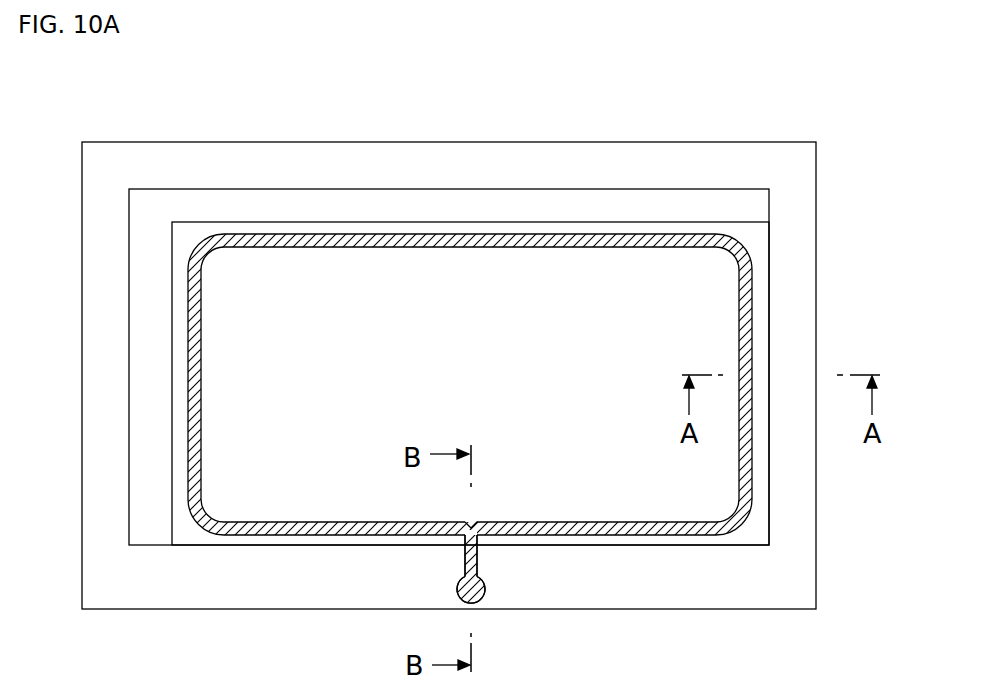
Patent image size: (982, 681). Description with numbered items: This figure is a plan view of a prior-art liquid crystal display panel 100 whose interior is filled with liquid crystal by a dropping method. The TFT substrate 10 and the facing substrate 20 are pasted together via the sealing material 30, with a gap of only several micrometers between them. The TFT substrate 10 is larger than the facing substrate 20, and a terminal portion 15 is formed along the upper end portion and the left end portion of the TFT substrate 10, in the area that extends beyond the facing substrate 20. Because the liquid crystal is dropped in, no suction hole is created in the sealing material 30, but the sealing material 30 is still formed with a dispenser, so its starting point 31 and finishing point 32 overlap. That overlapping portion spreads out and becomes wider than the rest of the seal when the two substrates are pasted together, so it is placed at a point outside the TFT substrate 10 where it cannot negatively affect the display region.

The display device 100 is at (232, 142).
The TFT substrate 10 is at (470, 189).
The terminal portion 15 is at (470, 312).
The facing substrate 20 is at (658, 222).
The sealing material 30 is at (752, 306).
The starting point 31 is at (483, 588).
The finishing point 32 is at (471, 569).